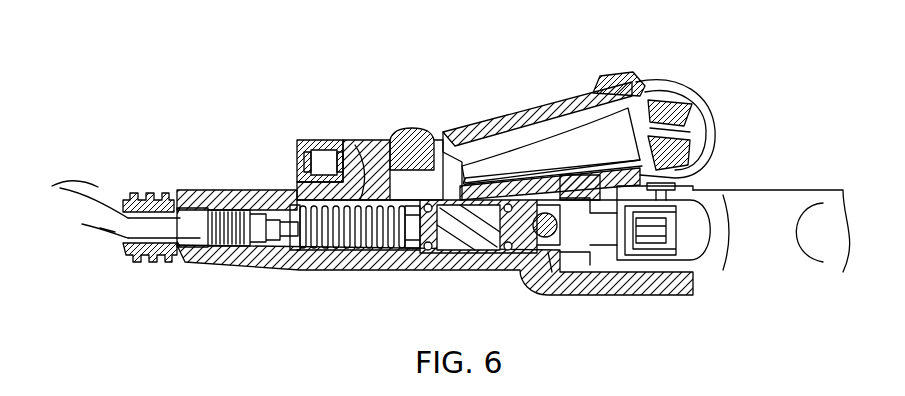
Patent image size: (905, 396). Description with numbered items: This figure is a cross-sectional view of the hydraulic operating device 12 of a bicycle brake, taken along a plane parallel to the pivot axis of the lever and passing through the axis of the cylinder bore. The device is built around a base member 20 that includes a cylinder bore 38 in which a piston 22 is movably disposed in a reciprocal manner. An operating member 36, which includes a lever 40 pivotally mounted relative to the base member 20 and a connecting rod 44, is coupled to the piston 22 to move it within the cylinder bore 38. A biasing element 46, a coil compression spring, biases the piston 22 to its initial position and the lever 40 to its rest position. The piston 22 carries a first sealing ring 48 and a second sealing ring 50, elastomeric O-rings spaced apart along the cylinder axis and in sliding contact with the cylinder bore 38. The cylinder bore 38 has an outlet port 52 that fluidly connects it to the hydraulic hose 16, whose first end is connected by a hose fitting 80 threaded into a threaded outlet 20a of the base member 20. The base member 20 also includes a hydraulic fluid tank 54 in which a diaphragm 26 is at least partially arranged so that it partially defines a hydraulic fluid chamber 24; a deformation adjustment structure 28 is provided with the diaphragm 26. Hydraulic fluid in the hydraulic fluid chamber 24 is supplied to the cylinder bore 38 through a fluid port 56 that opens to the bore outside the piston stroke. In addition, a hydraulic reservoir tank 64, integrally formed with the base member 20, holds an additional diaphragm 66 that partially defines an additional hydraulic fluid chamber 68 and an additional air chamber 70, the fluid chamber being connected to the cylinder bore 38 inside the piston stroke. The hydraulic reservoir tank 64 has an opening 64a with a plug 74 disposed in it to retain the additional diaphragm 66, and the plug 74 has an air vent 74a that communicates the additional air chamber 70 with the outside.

The hydraulic operating device 12 is at (355, 52).
The hydraulic hose 16 is at (94, 222).
The base member 20 is at (398, 280).
The threaded outlet 20a is at (216, 263).
The piston 22 is at (475, 254).
The hydraulic fluid chamber 24 is at (345, 140).
The diaphragm 26 is at (333, 148).
The deformation adjustment structure 28 is at (311, 138).
The operating member 36 is at (714, 285).
The cylinder bore 38 is at (370, 251).
The lever 40 is at (788, 190).
The connecting rod 44 is at (580, 262).
The biasing element 46 is at (330, 270).
The first sealing ring 48 is at (428, 256).
The second sealing ring 50 is at (509, 256).
The outlet port 52 is at (291, 270).
The hydraulic fluid tank 54 is at (300, 142).
The fluid port 56 is at (378, 160).
The hydraulic reservoir tank 64 is at (508, 115).
The opening 64a is at (690, 96).
The additional diaphragm 66 is at (483, 162).
The additional hydraulic fluid chamber 68 is at (548, 126).
The additional air chamber 70 is at (634, 148).
The plug 74 is at (708, 114).
The air vent 74a is at (692, 133).
The hose fitting 80 is at (232, 212).